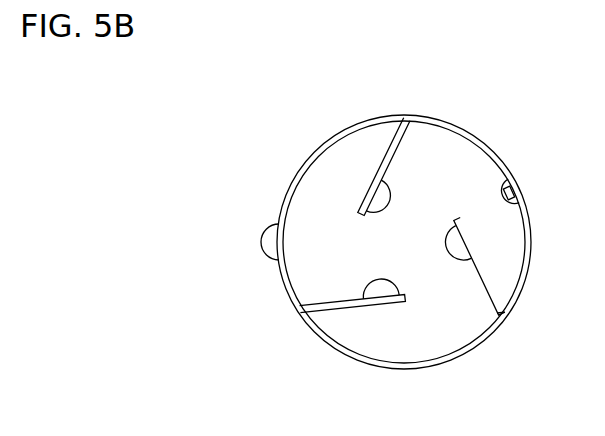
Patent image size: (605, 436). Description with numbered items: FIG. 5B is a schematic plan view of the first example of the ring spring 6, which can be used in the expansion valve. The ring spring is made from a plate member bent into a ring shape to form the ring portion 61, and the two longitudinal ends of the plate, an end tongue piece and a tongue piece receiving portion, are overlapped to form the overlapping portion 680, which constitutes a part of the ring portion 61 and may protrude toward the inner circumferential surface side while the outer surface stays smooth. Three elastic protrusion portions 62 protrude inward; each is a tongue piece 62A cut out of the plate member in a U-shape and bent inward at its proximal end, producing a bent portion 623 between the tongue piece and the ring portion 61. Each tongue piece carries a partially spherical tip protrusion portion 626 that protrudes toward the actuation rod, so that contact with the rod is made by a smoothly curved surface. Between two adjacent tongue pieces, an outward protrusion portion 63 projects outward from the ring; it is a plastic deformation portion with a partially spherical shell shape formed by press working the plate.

The ring spring 6 is at (296, 76).
The ring portion 61 is at (530, 263).
The elastic protrusion portion 62 is at (406, 152).
The tongue piece 62A is at (474, 315).
The outward protrusion portion 63 is at (264, 236).
The bent portion 623 is at (501, 311).
The tip protrusion portion 626 is at (452, 250).
The overlapping portion 680 is at (497, 181).